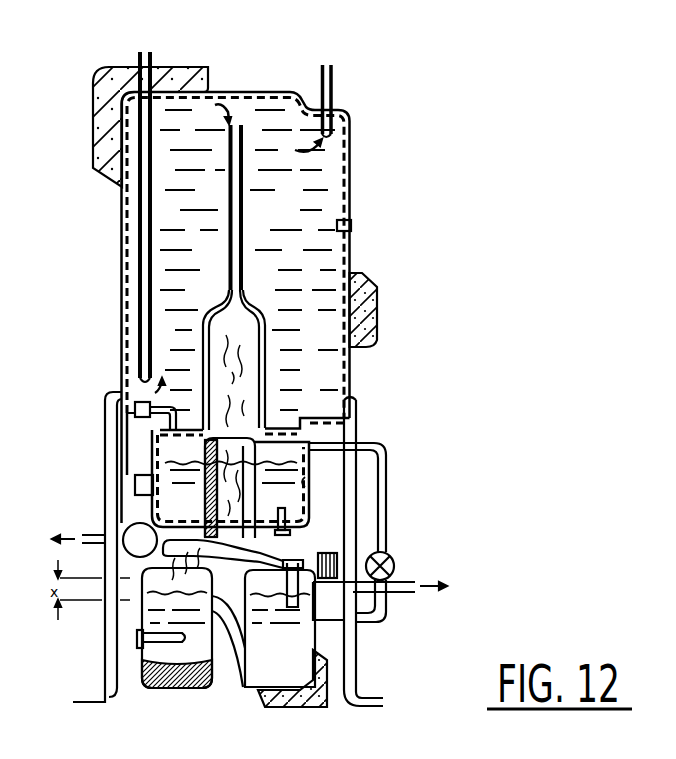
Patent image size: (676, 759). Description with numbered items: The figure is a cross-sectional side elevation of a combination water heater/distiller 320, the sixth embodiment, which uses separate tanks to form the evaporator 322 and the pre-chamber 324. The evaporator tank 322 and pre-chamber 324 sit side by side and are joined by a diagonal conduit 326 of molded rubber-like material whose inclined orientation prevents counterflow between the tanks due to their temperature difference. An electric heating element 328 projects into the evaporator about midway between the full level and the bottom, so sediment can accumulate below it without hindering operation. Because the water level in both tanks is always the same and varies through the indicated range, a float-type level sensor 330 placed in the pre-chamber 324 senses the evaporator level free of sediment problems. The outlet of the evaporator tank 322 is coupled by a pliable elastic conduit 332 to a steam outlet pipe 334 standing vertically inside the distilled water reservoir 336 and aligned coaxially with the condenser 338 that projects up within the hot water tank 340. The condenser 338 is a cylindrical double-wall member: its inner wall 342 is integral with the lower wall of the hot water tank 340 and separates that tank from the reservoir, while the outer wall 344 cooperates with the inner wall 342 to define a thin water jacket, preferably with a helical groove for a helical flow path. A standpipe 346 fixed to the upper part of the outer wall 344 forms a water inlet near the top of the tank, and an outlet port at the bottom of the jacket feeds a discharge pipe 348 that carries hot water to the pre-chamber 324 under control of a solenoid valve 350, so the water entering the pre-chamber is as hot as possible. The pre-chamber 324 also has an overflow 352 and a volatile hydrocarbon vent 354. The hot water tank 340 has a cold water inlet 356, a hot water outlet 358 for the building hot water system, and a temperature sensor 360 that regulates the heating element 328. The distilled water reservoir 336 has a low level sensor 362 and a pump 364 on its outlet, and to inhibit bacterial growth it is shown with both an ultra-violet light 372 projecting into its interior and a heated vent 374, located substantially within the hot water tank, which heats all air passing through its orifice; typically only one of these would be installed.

The water heater/distiller 320 is at (393, 103).
The evaporator tank 322 is at (152, 688).
The pre-chamber 324 is at (250, 687).
The diagonal conduit 326 is at (213, 688).
The electric heating element 328 is at (137, 639).
The float-type level sensor 330 is at (296, 562).
The elastic conduit 332 is at (200, 563).
The steam outlet pipe 334 is at (308, 502).
The distilled water reservoir 336 is at (128, 505).
The condenser 338 is at (268, 378).
The hot water tank 340 is at (352, 174).
The inner wall 342 is at (246, 337).
The outer wall 344 is at (263, 317).
The standpipe 346 is at (325, 231).
The discharge pipe 348 is at (358, 436).
The solenoid valve 350 is at (396, 567).
The overflow 352 is at (412, 593).
The volatile hydrocarbon vent 354 is at (337, 558).
The cold water inlet 356 is at (147, 48).
The hot water outlet 358 is at (333, 66).
The temperature sensor 360 is at (352, 216).
The low level sensor 362 is at (302, 483).
The pump 364 is at (123, 528).
The ultra-violet light 372 is at (135, 485).
The heated vent 374 is at (121, 396).